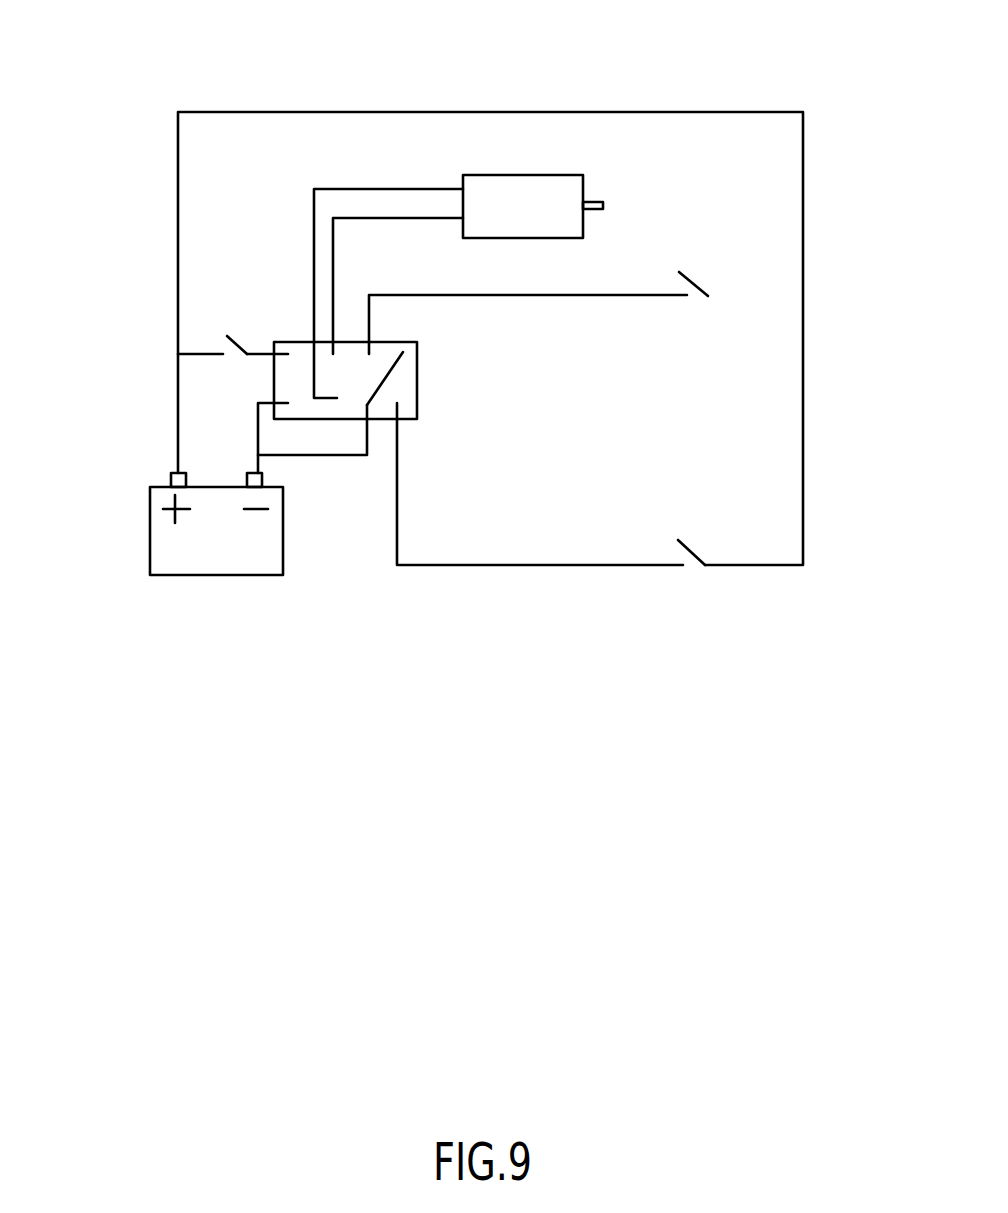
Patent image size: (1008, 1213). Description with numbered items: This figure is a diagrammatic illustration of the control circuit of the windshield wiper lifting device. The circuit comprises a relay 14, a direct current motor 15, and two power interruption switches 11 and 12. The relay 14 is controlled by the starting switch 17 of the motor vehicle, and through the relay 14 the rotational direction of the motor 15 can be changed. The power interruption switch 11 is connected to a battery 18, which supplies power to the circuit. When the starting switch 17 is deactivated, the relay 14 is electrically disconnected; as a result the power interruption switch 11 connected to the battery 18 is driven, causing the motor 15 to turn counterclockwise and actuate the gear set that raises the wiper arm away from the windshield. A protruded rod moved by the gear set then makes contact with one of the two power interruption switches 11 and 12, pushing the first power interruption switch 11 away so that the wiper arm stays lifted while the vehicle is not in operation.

The power interruption switch 11 is at (705, 537).
The power interruption switch 12 is at (709, 278).
The relay 14 is at (417, 405).
The direct current motor 15 is at (527, 197).
The starting switch 17 is at (213, 337).
The battery 18 is at (167, 548).